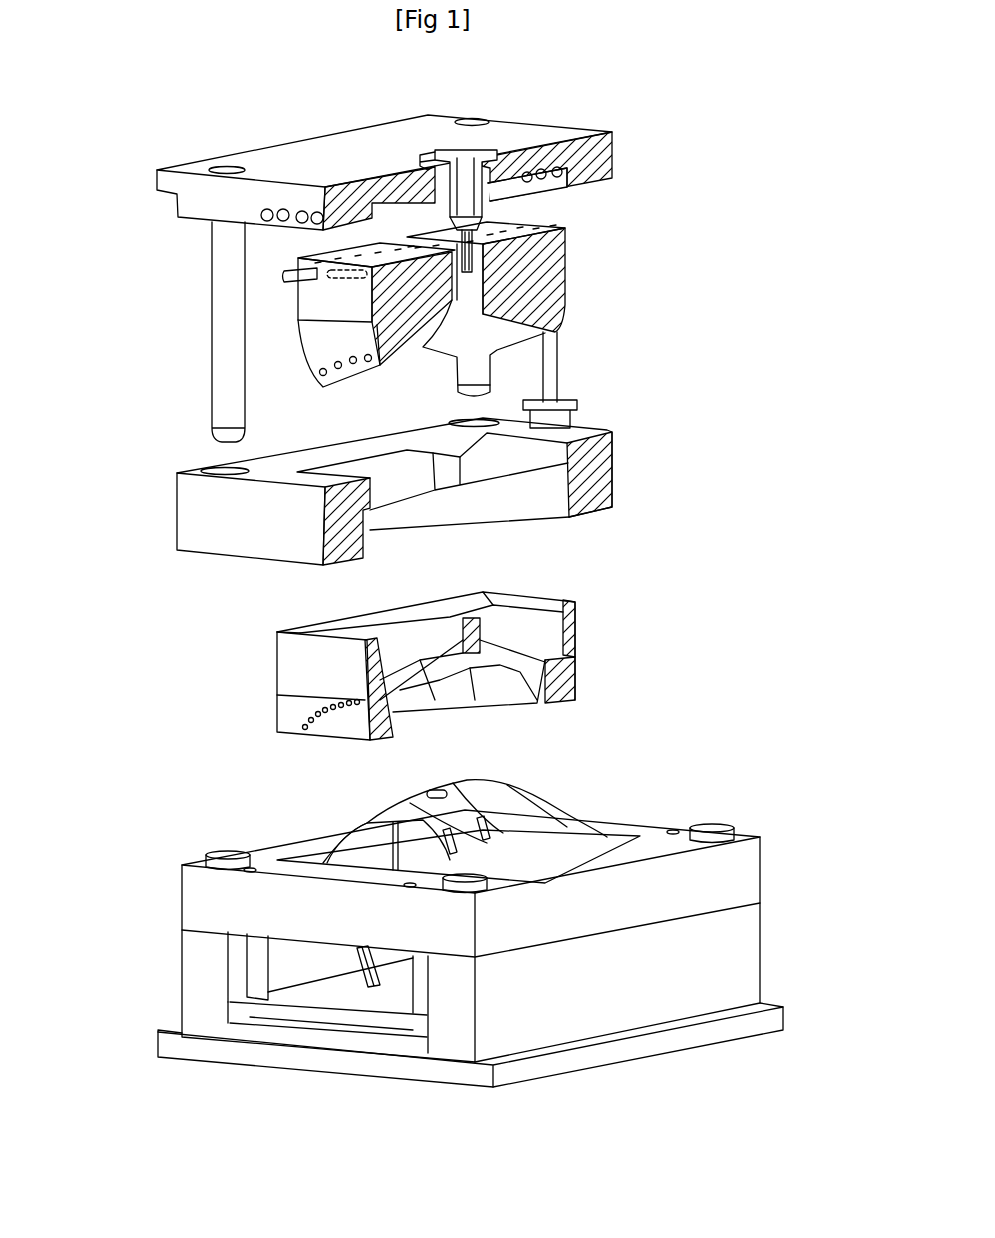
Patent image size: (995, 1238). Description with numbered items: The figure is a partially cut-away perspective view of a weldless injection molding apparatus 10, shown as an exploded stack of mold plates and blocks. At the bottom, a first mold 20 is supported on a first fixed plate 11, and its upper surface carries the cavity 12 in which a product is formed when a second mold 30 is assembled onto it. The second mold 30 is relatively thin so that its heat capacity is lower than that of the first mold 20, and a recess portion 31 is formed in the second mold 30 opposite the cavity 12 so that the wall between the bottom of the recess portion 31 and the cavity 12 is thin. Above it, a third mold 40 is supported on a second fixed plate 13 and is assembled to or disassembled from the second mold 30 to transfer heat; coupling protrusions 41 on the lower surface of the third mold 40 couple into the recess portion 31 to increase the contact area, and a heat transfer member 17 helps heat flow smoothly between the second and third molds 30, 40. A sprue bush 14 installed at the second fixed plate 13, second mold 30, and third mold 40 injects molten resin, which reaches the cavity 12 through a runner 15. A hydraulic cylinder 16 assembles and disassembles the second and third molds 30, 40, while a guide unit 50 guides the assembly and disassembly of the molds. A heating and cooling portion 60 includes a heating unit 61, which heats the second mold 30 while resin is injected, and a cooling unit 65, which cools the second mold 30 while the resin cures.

The weldless injection molding apparatus 10 is at (735, 118).
The first fixed plate 11 is at (765, 1022).
The cavity 12 is at (555, 795).
The second fixed plate 13 is at (587, 148).
The sprue bush 14 is at (462, 158).
The runner 15 is at (510, 240).
The hydraulic cylinder 16 is at (575, 398).
The heat transfer member 17 is at (548, 640).
The first mold 20 is at (735, 873).
The second mold 30 is at (575, 690).
The recess portion 31 is at (555, 623).
The third mold 40 is at (545, 272).
The coupling protrusions 41 is at (545, 317).
The guide unit 50 is at (180, 327).
The heating and cooling portion 60 is at (97, 385).
The heating unit 61 is at (280, 705).
The cooling unit 65 is at (300, 306).